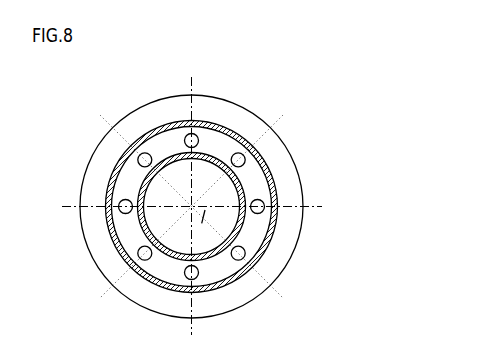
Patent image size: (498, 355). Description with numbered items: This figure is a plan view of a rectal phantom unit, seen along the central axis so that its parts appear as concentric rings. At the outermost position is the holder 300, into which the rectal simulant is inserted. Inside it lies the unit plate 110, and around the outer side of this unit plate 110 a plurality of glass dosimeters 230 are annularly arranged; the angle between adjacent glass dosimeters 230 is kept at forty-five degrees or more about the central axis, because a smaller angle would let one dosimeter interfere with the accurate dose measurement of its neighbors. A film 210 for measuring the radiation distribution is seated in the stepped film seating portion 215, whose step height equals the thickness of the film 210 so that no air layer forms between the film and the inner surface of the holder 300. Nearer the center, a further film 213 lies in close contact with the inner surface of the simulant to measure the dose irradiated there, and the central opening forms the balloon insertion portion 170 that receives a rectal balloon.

The unit plate 110 is at (222, 270).
The balloon insertion portion 170 is at (180, 190).
The film 210 is at (160, 238).
The film 213 is at (170, 258).
The film seating portion 215 is at (120, 255).
The glass dosimeter 230 is at (262, 200).
The holder 300 is at (280, 247).